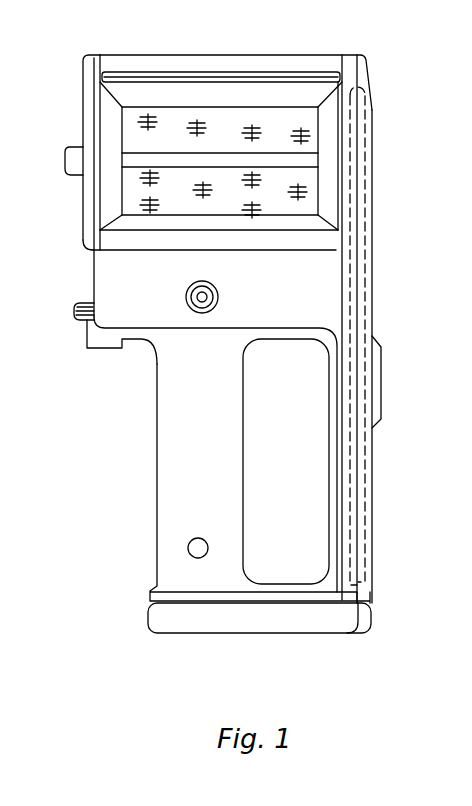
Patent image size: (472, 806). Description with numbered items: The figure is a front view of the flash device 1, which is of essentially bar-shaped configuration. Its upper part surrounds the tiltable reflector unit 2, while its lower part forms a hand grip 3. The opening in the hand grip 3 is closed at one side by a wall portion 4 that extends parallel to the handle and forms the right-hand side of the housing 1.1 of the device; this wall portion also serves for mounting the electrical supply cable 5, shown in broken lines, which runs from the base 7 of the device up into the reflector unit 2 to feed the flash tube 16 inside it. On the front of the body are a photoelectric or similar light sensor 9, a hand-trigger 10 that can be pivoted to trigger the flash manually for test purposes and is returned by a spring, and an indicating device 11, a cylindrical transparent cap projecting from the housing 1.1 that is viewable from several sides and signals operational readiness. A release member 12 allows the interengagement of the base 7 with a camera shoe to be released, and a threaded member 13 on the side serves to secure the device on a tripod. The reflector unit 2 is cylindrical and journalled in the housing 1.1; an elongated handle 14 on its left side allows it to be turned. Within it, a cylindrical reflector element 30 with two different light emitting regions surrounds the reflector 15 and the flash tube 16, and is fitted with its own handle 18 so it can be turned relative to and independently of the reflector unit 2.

The device 1 is at (157, 421).
The housing 1.1 is at (303, 286).
The reflector unit 2 is at (187, 77).
The hand grip 3 is at (165, 500).
The wall portion 4 is at (368, 590).
The electrical supply cable 5 is at (352, 303).
The base 7 is at (165, 625).
The light sensor 9 is at (209, 297).
The hand-trigger 10 is at (97, 345).
The indicating device 11 is at (75, 302).
The release member 12 is at (198, 548).
The securing member 13 is at (375, 347).
The elongated handle 14 is at (64, 161).
The reflector 15 is at (243, 95).
The flash tube 16 is at (143, 157).
The handle 18 is at (133, 72).
The reflector element 30 is at (132, 188).